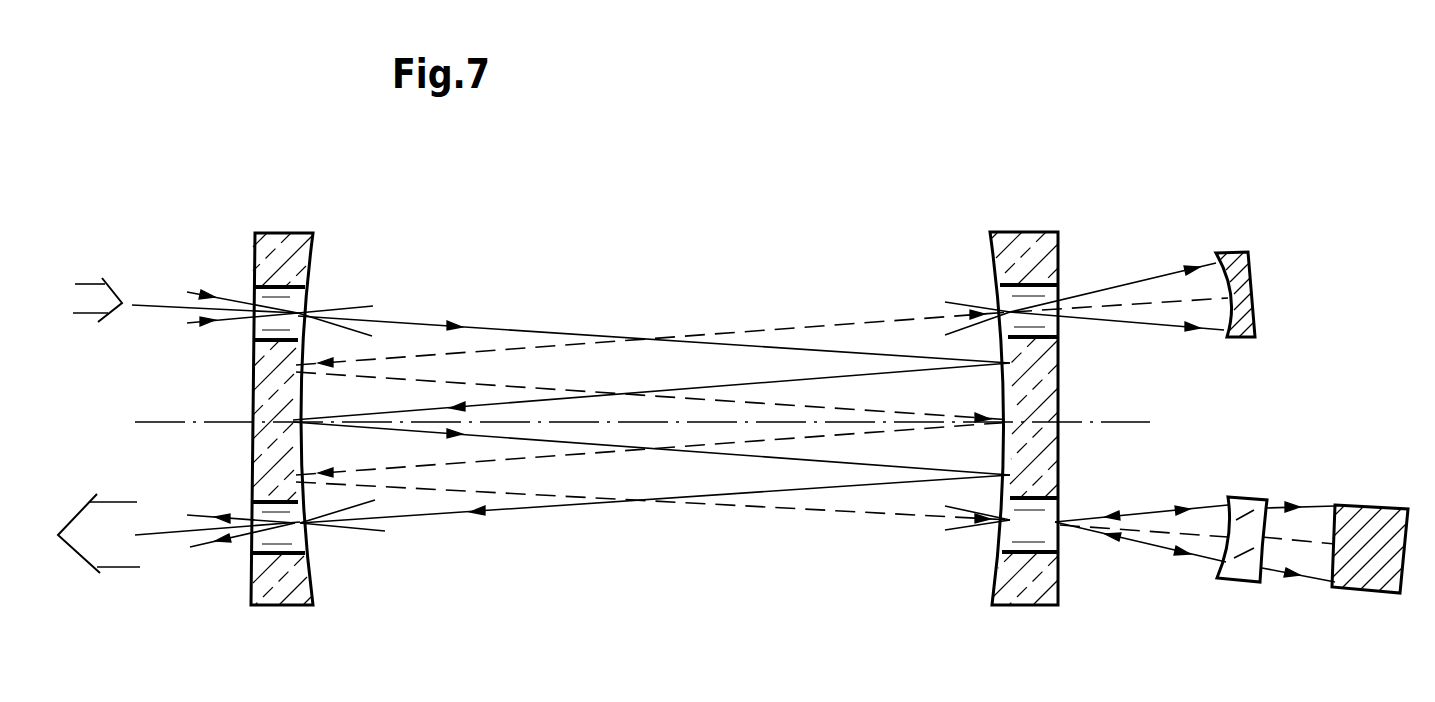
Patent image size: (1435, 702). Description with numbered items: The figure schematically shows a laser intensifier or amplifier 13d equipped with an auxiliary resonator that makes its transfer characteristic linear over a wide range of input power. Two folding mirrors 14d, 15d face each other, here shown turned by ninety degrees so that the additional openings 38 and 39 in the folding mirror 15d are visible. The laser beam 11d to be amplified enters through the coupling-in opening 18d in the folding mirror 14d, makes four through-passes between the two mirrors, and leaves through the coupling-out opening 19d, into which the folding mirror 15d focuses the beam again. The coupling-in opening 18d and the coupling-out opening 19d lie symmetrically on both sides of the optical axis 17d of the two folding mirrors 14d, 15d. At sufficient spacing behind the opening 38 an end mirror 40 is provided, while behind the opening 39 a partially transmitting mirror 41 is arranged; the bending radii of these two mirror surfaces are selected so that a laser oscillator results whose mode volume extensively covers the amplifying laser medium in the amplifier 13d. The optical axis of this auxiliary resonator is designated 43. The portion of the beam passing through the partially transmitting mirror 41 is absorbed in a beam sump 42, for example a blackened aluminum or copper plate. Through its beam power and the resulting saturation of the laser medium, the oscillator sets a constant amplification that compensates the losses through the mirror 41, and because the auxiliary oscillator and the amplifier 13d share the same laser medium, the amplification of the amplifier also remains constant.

The laser beam 11d is at (93, 293).
The intensifier or amplifier 13d is at (660, 240).
The folding mirror or reflecting means 14d is at (295, 258).
The folding mirror or reflecting means 15d is at (1045, 258).
The optical axis 17d is at (583, 423).
The coupling-in opening 18d is at (250, 272).
The coupling-out opening 19d is at (277, 540).
The additional opening 38 is at (1005, 280).
The additional opening 39 is at (1012, 535).
The end mirror or reflecting means 40 is at (1250, 284).
The partially transmitting mirror 41 is at (1236, 582).
The beam sump 42 is at (1357, 505).
The optical axis of the auxiliary resonator 43 is at (753, 333).